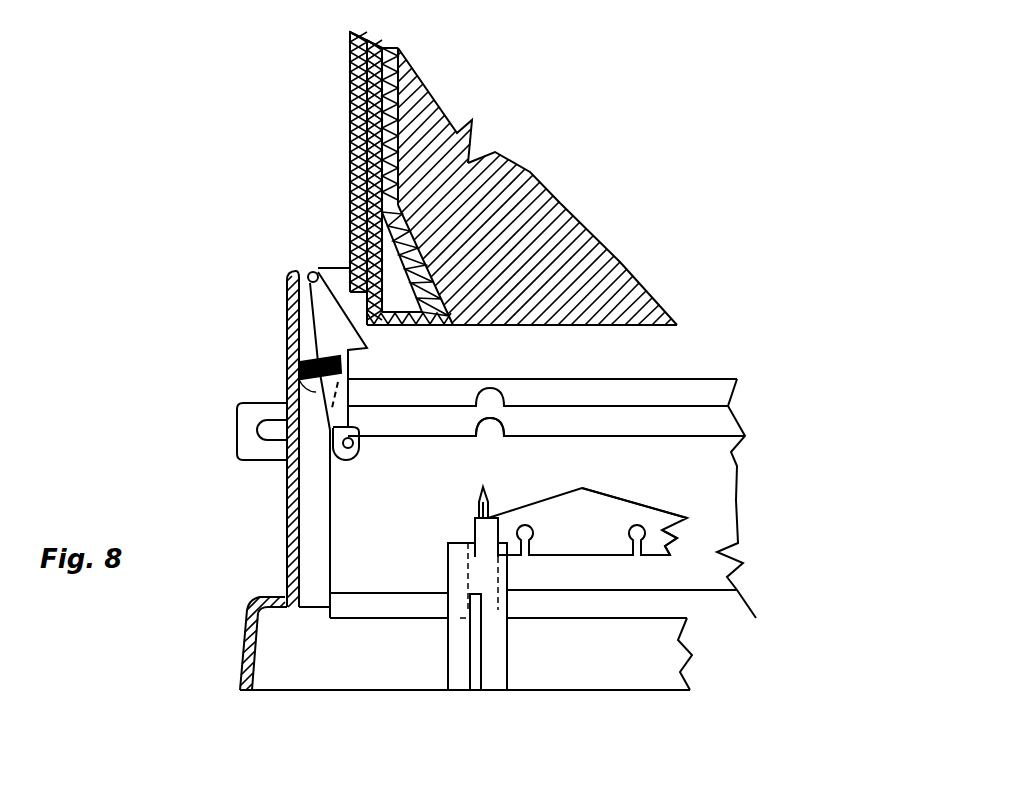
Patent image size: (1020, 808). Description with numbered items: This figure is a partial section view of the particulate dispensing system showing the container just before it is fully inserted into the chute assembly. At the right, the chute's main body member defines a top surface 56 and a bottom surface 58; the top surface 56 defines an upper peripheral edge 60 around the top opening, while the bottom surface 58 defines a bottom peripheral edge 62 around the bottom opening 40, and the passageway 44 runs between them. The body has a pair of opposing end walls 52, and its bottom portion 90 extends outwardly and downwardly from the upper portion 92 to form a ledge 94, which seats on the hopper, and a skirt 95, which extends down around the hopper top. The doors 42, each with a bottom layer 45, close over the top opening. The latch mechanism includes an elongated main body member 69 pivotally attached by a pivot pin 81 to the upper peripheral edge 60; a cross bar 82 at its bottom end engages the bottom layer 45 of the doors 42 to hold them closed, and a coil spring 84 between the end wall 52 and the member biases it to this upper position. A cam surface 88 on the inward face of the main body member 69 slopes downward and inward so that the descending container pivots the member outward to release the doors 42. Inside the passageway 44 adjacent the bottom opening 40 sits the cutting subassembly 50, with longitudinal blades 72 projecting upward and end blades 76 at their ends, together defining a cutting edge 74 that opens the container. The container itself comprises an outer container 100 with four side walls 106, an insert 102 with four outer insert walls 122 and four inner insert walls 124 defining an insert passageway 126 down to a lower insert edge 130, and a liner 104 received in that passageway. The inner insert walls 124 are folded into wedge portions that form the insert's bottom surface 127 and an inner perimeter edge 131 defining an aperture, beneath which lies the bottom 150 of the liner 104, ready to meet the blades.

The bottom opening 40 is at (275, 667).
The doors 42 is at (702, 387).
The passageway 44 is at (332, 512).
The bottom layer 45 is at (412, 438).
The cutting subassembly 50 is at (657, 508).
The end walls 52 is at (285, 477).
The top surface 56 is at (297, 265).
The bottom surface 58 is at (247, 690).
The upper peripheral edge 60 is at (308, 268).
The bottom peripheral edge 62 is at (348, 690).
The main body members 69 is at (285, 325).
The longitudinal blades 72 is at (673, 540).
The cutting edge 74 is at (607, 493).
The end blades 76 is at (490, 492).
The pivot pin 81 is at (310, 318).
The cross bar 82 is at (348, 458).
The coil spring 84 is at (287, 395).
The cam surface 88 is at (288, 352).
The bottom portion 90 is at (240, 645).
The upper portion 92 is at (286, 540).
The ledge 94 is at (272, 608).
The skirt 95 is at (245, 618).
The outer container 100 is at (347, 80).
The insert 102 is at (370, 45).
The liner 104 is at (427, 108).
The side walls 106 is at (348, 106).
The outer insert walls 122 is at (373, 68).
The inner insert walls 124 is at (397, 68).
The insert passageway 126 is at (505, 163).
The bottom surface 127 is at (400, 330).
The lower insert edge 130 is at (367, 328).
The inner perimeter edge 131 is at (470, 326).
The bottom 150 is at (645, 325).